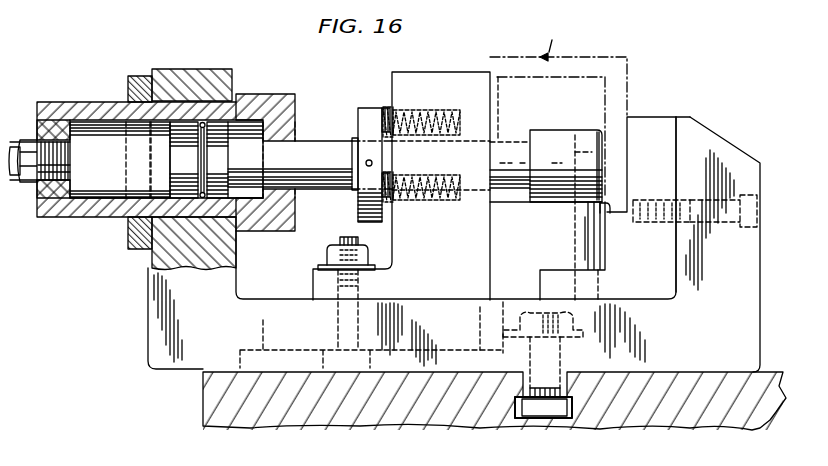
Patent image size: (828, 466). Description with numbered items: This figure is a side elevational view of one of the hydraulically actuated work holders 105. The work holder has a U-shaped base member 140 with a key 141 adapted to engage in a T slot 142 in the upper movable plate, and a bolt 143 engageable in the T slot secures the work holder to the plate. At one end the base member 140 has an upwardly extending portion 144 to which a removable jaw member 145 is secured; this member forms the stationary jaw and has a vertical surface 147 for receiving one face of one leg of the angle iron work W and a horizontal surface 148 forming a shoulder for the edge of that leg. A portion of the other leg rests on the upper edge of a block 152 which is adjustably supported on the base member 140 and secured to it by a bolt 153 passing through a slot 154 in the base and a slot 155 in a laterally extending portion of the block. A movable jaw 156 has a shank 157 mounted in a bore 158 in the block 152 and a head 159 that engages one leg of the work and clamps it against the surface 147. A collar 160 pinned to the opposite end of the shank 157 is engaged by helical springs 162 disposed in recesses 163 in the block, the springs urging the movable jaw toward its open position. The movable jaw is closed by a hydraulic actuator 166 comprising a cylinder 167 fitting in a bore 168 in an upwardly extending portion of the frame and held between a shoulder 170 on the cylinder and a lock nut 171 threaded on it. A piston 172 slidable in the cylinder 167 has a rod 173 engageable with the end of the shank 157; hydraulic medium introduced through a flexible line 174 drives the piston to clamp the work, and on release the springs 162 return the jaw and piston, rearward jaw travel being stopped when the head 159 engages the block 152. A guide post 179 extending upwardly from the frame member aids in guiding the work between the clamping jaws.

The hydraulically actuated work holder 105 is at (637, 64).
The U-shaped base member 140 is at (690, 371).
The key 141 is at (578, 374).
The T slot 142 is at (520, 414).
The bolt 143 is at (548, 419).
The upwardly extending portion 144 is at (730, 160).
The removable jaw member 145 is at (657, 130).
The vertical surface 147 is at (627, 133).
The horizontal surface 148 is at (598, 208).
The block 152 is at (462, 80).
The bolt 153 is at (333, 250).
The slot 154 is at (263, 320).
The slot 155 is at (372, 292).
The movable jaw 156 is at (541, 128).
The shank 157 is at (507, 153).
The bore 158 is at (497, 142).
The head 159 is at (557, 133).
The collar 160 is at (360, 112).
The helical springs 162 is at (405, 110).
The recesses 163 is at (420, 110).
The hydraulic actuator 166 is at (109, 72).
The cylinder 167 is at (90, 103).
The bore 168 is at (178, 100).
The shoulder 170 is at (250, 93).
The lock nut 171 is at (140, 78).
The piston 172 is at (172, 172).
The rod 173 is at (315, 145).
The flexible line 174 is at (13, 168).
The guide member or post 179 is at (577, 250).